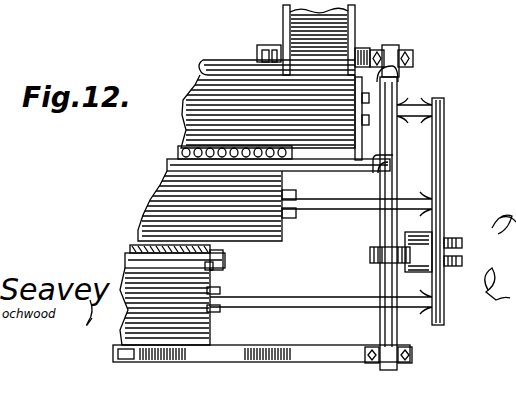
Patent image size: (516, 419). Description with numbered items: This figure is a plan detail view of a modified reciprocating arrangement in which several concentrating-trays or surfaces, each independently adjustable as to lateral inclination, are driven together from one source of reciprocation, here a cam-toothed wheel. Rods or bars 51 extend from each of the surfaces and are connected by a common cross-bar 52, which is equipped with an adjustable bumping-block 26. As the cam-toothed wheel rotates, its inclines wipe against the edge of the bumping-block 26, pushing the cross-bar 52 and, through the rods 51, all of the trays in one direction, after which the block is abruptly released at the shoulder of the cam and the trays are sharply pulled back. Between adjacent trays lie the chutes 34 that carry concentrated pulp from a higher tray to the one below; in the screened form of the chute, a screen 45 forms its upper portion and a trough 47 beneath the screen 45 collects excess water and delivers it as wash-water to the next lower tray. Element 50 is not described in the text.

The bumping-block 26 is at (425, 240).
The chute 34 is at (180, 153).
The screen 45 is at (214, 268).
The trough 47 is at (230, 251).
The clamp 50 is at (374, 250).
The rods or bars 51 is at (412, 102).
The cross-bar 52 is at (444, 178).